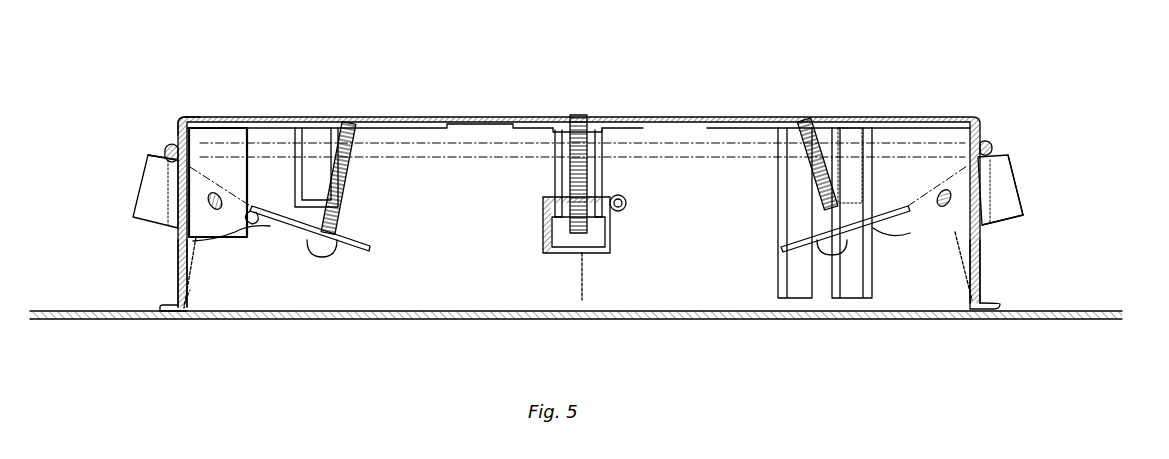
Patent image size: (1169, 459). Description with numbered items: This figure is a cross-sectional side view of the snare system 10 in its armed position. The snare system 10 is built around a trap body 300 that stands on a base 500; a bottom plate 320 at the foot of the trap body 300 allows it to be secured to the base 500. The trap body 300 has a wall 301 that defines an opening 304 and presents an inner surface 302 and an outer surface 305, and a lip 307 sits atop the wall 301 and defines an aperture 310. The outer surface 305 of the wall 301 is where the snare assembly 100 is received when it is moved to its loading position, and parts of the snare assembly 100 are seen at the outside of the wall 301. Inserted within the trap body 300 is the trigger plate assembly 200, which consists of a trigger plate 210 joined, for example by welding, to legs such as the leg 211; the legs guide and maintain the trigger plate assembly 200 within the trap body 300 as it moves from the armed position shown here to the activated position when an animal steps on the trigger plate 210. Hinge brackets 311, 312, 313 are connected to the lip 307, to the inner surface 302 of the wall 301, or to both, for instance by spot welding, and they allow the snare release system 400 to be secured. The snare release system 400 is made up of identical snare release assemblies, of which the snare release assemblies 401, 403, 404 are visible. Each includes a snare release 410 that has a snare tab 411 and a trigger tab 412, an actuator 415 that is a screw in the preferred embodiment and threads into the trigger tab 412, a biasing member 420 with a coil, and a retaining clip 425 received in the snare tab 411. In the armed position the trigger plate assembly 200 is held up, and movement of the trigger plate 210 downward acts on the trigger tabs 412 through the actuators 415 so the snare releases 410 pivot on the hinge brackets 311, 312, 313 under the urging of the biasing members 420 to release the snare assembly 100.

The snare system 10 is at (941, 103).
The snare assembly 100 is at (168, 147).
The trigger plate assembly 200 is at (481, 116).
The trigger plate 210 is at (650, 118).
The leg 211 is at (296, 138).
The trap body 300 is at (982, 257).
The wall 301 is at (177, 280).
The inner surface 302 is at (201, 267).
The opening 304 is at (332, 284).
The outer surface 305 is at (982, 303).
The lip 307 is at (247, 125).
The aperture 310 is at (882, 120).
The hinge bracket 311 is at (910, 150).
The hinge bracket 312 is at (187, 114).
The hinge bracket 313 is at (627, 118).
The bottom plate 320 is at (187, 314).
The snare release system 400 is at (1027, 178).
The snare release assembly 401 is at (1026, 195).
The snare release assembly 403 is at (570, 123).
The snare release assembly 404 is at (133, 197).
The snare release 410 is at (1017, 173).
The snare tab 411 is at (147, 158).
The trigger tab 412 is at (373, 248).
The actuator 415 is at (353, 170).
The biasing member 420 is at (197, 252).
The retaining clip 425 is at (219, 194).
The base 500 is at (1060, 309).